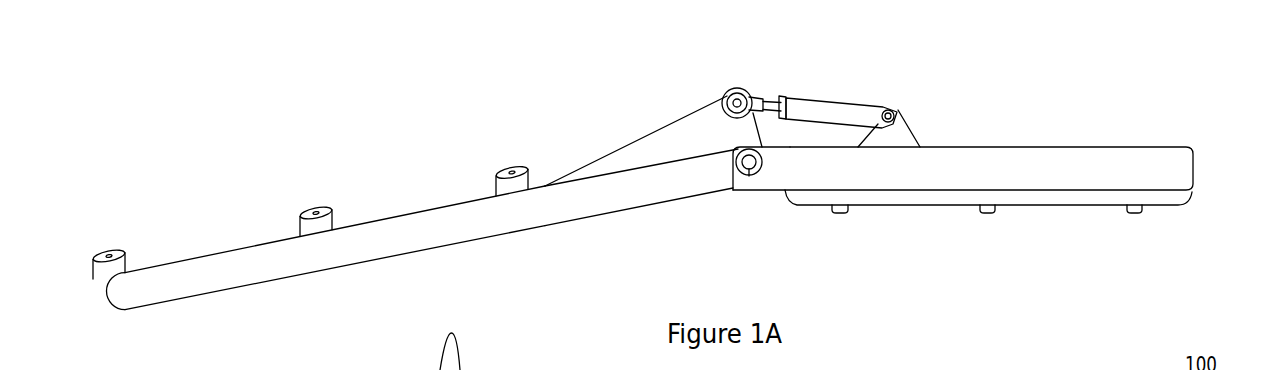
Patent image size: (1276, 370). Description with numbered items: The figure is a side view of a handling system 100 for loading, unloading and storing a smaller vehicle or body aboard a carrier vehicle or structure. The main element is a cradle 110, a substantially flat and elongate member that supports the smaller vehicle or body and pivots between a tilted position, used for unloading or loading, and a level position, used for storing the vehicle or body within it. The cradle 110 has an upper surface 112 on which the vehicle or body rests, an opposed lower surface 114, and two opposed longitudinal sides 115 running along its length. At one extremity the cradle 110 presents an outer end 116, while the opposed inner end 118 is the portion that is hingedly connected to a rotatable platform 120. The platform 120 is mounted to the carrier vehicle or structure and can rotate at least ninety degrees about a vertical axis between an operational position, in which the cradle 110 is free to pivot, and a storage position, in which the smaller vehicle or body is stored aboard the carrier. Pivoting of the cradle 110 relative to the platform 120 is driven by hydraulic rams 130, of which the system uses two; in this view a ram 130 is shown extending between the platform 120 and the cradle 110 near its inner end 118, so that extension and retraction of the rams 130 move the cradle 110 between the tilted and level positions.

The handling system 100 is at (1184, 100).
The cradle 110 is at (390, 200).
The upper surface 112 is at (238, 248).
The lower surface 114 is at (402, 257).
The longitudinal sides 115 is at (557, 205).
The outer end 116 is at (107, 300).
The inner end 118 is at (733, 187).
The rotatable platform 120 is at (1038, 131).
The hydraulic rams 130 is at (833, 95).